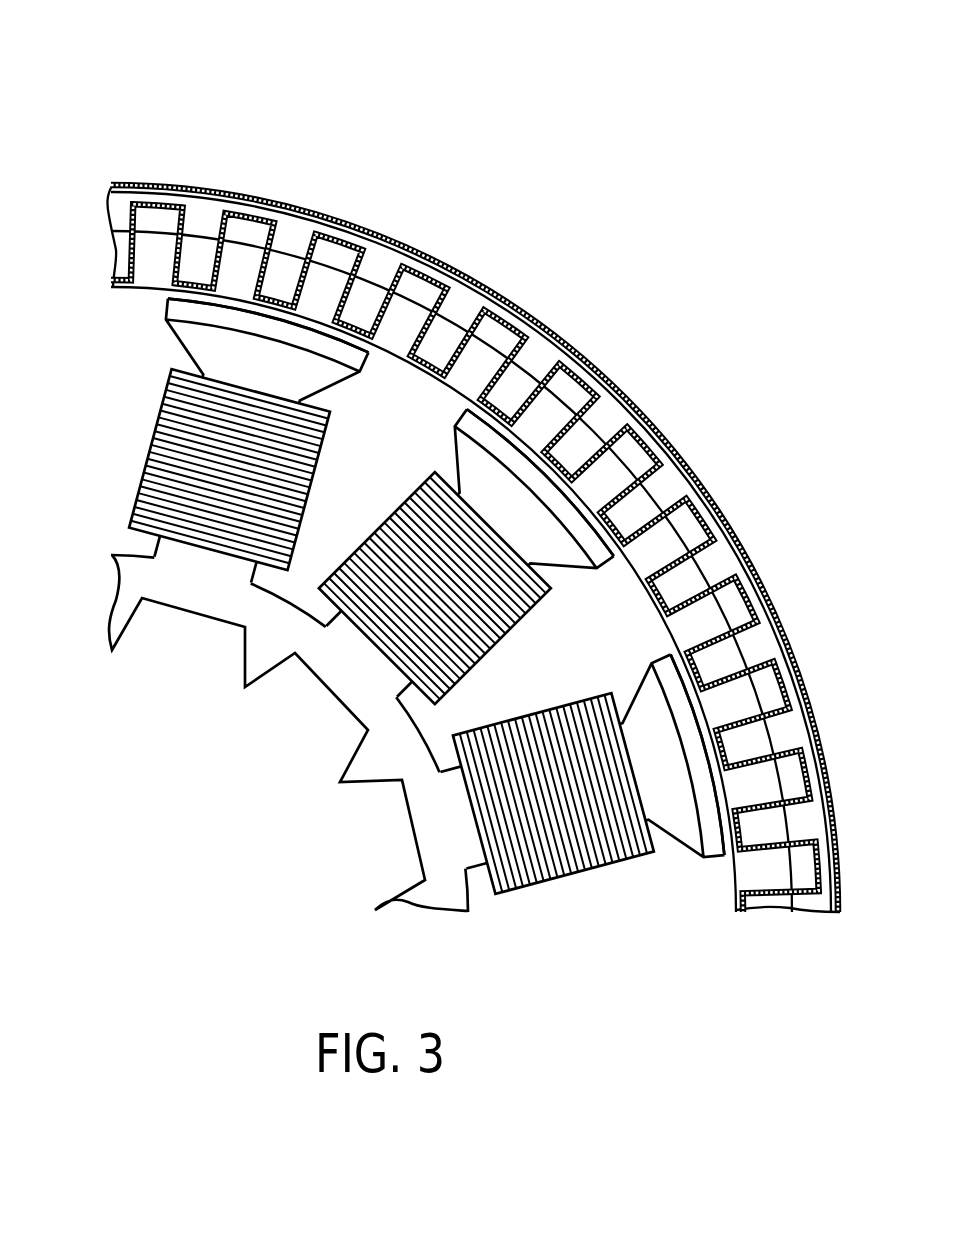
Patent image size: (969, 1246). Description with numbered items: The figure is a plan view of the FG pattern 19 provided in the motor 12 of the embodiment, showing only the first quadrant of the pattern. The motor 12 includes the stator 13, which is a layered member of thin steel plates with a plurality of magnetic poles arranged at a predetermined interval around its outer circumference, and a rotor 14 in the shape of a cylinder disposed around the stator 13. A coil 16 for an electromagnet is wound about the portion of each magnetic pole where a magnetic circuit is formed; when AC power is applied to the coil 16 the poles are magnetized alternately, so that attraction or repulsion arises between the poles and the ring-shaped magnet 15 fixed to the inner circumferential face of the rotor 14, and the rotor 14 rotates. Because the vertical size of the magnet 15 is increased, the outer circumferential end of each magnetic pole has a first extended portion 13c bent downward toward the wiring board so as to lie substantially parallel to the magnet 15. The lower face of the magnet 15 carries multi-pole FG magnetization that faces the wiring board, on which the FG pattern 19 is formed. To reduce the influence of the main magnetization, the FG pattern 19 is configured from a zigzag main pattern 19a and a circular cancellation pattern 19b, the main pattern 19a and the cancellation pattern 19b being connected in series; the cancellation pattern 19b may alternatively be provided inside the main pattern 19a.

The motor 12 is at (100, 83).
The stator 13 is at (333, 672).
The first extended portion 13c is at (717, 843).
The rotor 14 is at (200, 207).
The magnet 15 is at (285, 260).
The coil 16 is at (152, 458).
The FG pattern 19 is at (570, 178).
The main pattern 19a is at (423, 283).
The cancellation pattern 19b is at (510, 300).